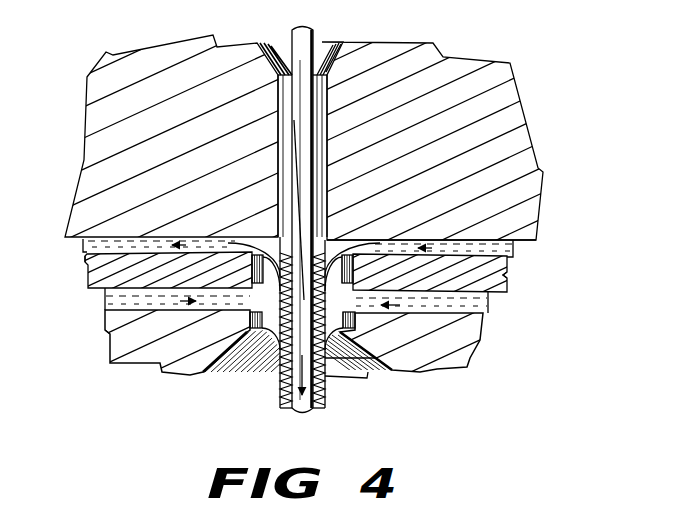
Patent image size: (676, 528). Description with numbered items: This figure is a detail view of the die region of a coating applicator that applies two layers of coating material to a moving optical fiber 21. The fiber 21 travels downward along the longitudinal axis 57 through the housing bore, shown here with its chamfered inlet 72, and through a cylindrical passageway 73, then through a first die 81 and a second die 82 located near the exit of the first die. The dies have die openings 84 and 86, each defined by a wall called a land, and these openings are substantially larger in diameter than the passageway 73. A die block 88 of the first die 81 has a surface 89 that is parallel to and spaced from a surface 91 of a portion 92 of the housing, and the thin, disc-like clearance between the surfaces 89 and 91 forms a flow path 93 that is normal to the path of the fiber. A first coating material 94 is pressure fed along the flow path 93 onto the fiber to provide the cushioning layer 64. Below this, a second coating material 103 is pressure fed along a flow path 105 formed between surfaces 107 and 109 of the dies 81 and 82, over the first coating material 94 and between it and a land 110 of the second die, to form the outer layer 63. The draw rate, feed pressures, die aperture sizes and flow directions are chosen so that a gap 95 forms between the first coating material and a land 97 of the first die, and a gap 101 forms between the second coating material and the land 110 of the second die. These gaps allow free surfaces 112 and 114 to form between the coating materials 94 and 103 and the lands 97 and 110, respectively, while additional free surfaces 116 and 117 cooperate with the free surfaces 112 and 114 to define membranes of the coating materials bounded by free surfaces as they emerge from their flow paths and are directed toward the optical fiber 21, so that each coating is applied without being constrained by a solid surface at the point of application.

The optical fiber 21 is at (320, 43).
The axis 57 is at (302, 117).
The layer of coating material 63 is at (328, 400).
The layer of coating material 64 is at (277, 403).
The chamfered bore inlet 72 is at (337, 62).
The cylindrical passageway 73 is at (326, 127).
The first die 81 is at (81, 275).
The second die 82 is at (97, 329).
The die opening 84 is at (350, 237).
The die opening 86 is at (279, 343).
The die block 88 is at (507, 275).
The surface 89 is at (493, 238).
The surface 91 is at (413, 235).
The portion of the housing 92 is at (517, 163).
The flow path 93 is at (162, 247).
The first coating material 94 is at (113, 242).
The gap 95 is at (355, 268).
The land 97 is at (362, 266).
The gap 101 is at (372, 347).
The second coating material 103 is at (124, 310).
The flow path 105 is at (443, 306).
The surface 107 is at (410, 291).
The surface 109 is at (476, 344).
The land 110 is at (357, 322).
The free surface 112 is at (252, 268).
The free surface 114 is at (248, 320).
The free surface 116 is at (278, 222).
The free surface 117 is at (247, 285).